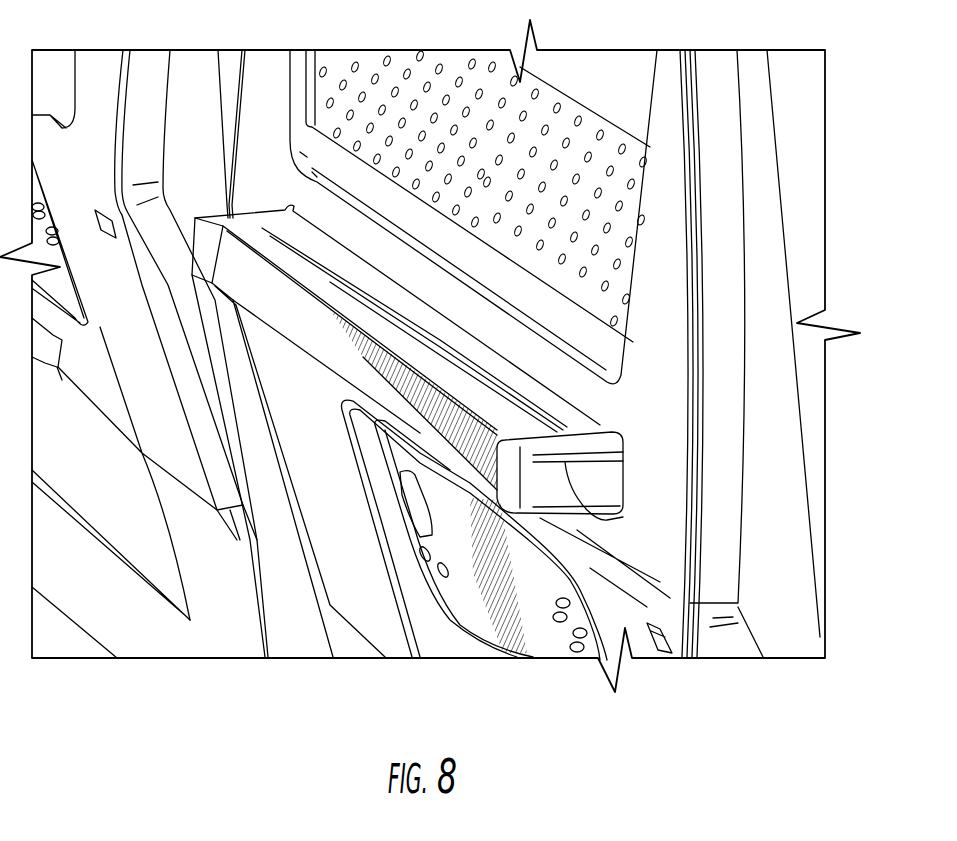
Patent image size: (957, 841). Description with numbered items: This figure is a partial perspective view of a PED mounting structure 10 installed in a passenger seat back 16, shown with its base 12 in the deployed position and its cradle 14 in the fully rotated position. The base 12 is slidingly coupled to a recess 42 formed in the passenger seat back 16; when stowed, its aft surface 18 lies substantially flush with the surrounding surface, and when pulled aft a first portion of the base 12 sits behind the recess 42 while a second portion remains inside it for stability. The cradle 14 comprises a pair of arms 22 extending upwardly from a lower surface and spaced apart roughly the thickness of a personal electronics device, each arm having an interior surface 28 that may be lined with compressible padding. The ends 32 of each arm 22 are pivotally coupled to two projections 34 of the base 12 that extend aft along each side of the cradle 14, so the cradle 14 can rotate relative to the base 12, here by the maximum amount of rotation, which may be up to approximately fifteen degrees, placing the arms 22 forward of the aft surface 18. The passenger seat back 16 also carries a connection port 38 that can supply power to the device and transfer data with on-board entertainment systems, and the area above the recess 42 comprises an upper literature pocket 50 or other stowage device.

The PED mounting structure 10 is at (560, 423).
The base 12 is at (600, 428).
The cradle 14 is at (353, 363).
The passenger seat back 16 is at (713, 90).
The aft surface 18 is at (503, 480).
The arms 22 is at (397, 407).
The interior surface 28 is at (313, 278).
The ends 32 is at (300, 230).
The projections 34 is at (603, 518).
The connection port 38 is at (663, 630).
The recess 42 is at (605, 517).
The upper literature pocket 50 is at (620, 108).